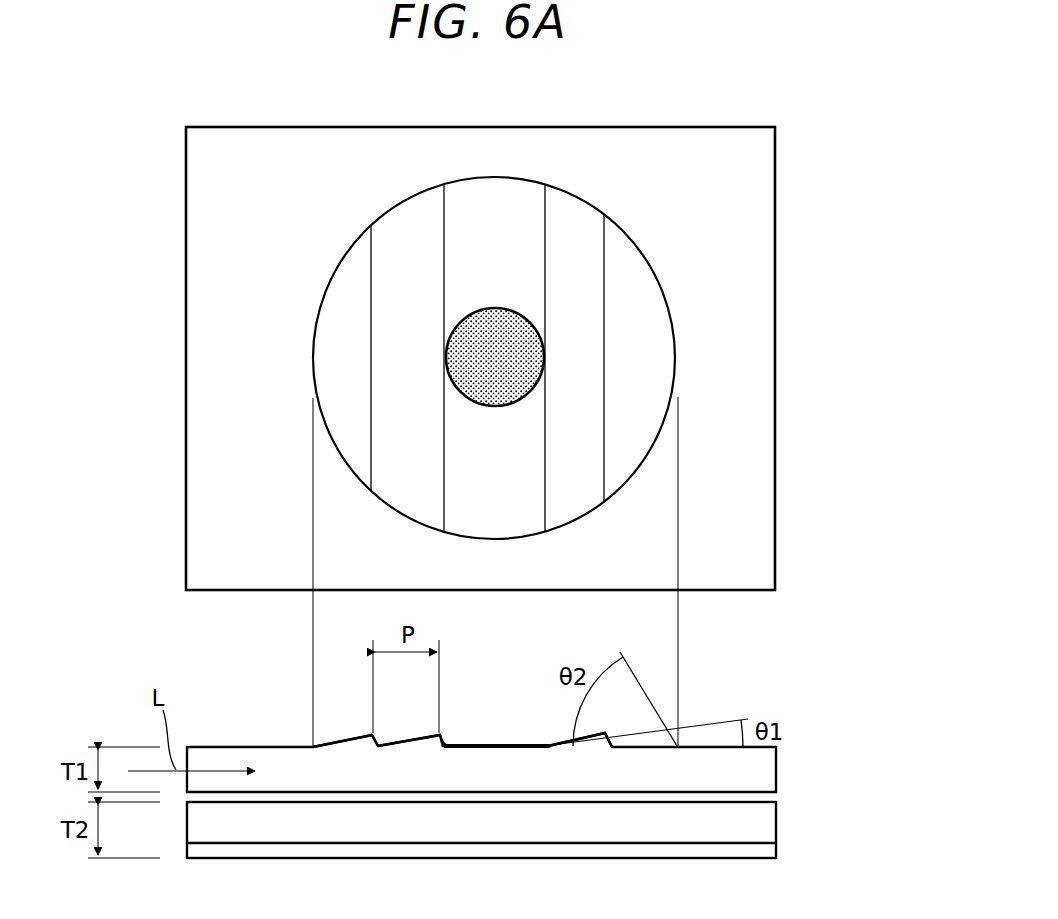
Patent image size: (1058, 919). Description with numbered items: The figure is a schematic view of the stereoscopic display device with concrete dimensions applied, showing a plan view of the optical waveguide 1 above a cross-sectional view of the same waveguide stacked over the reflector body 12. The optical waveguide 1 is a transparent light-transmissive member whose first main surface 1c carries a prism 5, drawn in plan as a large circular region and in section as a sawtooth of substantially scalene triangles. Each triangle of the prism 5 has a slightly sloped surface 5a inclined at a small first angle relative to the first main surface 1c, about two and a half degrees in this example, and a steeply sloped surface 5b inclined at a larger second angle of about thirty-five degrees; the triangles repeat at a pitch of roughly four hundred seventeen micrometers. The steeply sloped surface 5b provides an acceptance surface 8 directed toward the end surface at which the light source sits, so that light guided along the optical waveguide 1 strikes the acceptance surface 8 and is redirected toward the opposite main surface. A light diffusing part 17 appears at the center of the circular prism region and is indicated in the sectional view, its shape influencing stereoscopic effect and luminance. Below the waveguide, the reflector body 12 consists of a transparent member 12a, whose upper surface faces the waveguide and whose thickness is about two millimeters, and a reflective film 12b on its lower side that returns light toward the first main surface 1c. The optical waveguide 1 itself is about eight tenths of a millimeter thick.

The optical waveguide 1 is at (789, 336).
The first main surface 1c is at (752, 430).
The prism 5 is at (647, 292).
The slightly sloped surface 5a is at (352, 738).
The steeply sloped surface 5b is at (378, 740).
The acceptance surface 8 is at (470, 752).
The reflector body 12 is at (887, 797).
The transparent member 12a is at (770, 820).
The reflective film 12b is at (770, 850).
The light diffusing part 17 is at (491, 328).